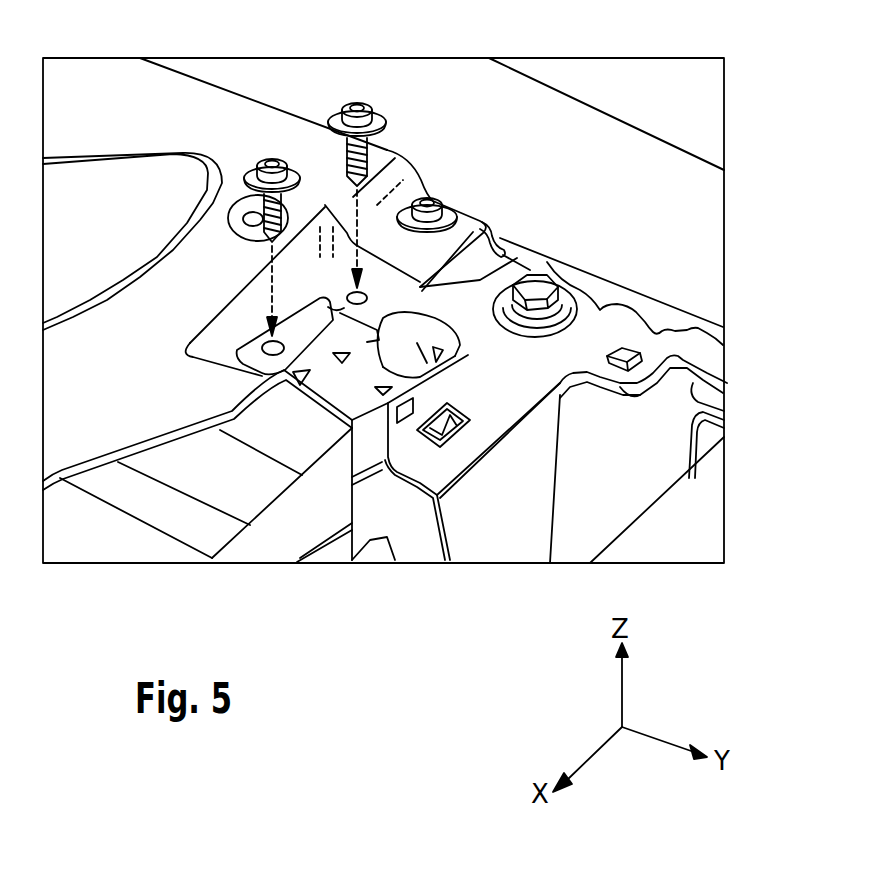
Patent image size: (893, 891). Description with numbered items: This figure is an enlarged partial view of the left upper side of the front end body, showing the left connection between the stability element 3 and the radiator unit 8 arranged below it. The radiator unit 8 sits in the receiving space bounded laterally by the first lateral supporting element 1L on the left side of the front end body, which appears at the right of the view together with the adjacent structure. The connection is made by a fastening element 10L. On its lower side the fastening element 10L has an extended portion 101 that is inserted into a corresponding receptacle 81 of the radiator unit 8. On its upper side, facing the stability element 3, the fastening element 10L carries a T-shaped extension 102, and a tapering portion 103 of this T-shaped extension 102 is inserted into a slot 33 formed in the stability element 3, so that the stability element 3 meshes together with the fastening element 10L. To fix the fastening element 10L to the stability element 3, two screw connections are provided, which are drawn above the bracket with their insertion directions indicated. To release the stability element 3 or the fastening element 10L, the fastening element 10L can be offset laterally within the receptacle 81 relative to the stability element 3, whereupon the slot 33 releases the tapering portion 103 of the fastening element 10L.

The stability element 3 is at (195, 97).
The T-shaped extension 102 is at (328, 307).
The fastening element 10L is at (385, 345).
The receptacle 81 is at (506, 258).
The first lateral supporting element 1L is at (600, 327).
The slot 33 is at (281, 312).
The extended portion 101 is at (395, 368).
The tapering portion 103 is at (397, 297).
The radiator unit 8 is at (373, 440).